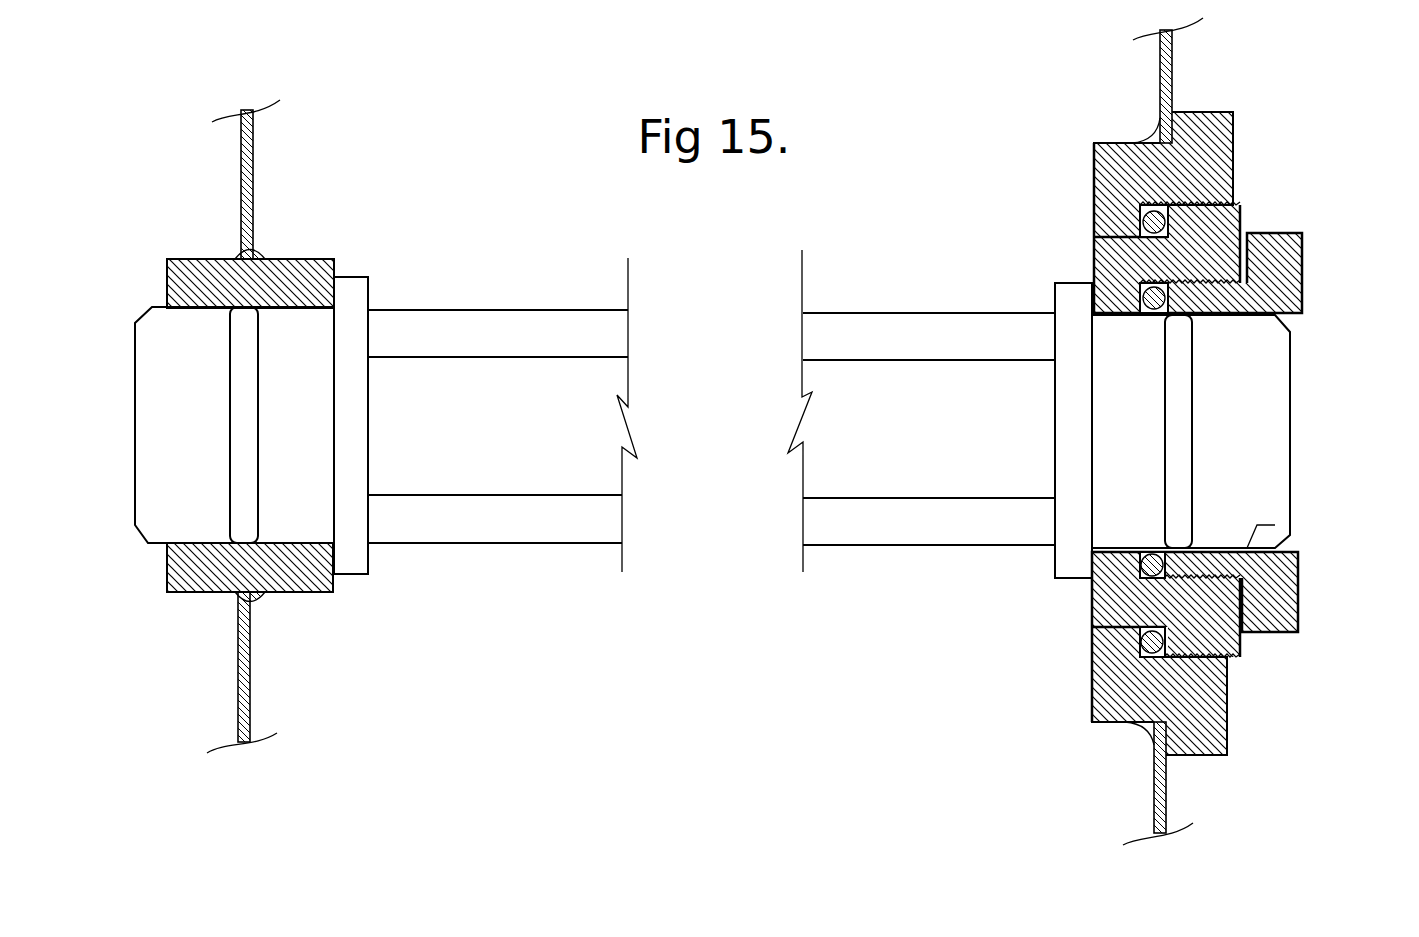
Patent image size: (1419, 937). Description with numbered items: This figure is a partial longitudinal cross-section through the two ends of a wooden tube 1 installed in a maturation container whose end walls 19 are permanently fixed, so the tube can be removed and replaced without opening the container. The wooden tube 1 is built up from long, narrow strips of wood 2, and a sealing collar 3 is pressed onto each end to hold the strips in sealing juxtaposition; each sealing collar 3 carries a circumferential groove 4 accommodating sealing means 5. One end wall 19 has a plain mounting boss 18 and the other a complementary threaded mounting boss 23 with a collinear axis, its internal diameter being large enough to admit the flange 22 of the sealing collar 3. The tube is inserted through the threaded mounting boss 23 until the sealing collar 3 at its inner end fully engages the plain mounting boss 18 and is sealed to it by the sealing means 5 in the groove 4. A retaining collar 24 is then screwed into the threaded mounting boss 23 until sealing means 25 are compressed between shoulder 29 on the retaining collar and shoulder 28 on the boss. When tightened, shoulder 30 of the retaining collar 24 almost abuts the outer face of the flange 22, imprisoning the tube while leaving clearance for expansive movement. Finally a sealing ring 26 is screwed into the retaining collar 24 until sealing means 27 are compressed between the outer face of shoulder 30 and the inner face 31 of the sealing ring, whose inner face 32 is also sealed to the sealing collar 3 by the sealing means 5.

The wooden tube 1 is at (493, 439).
The strips of wood 2 is at (540, 340).
The sealing collar 3 is at (160, 518).
The circumferential groove 4 is at (260, 355).
The sealing means 5 is at (243, 388).
The plain mounting boss 18 is at (210, 258).
The end wall 19 is at (233, 655).
The flange 22 is at (352, 577).
The threaded mounting boss 23 is at (1205, 137).
The retaining collar 24 is at (1227, 232).
The sealing means 25 is at (1113, 205).
The sealing ring 26 is at (1283, 263).
The sealing means 27 is at (1135, 296).
The shoulder 28 is at (1112, 223).
The shoulder 29 is at (1173, 213).
The shoulder 30 is at (1113, 305).
The inner face 31 is at (1225, 317).
The inner face 32 is at (1260, 525).